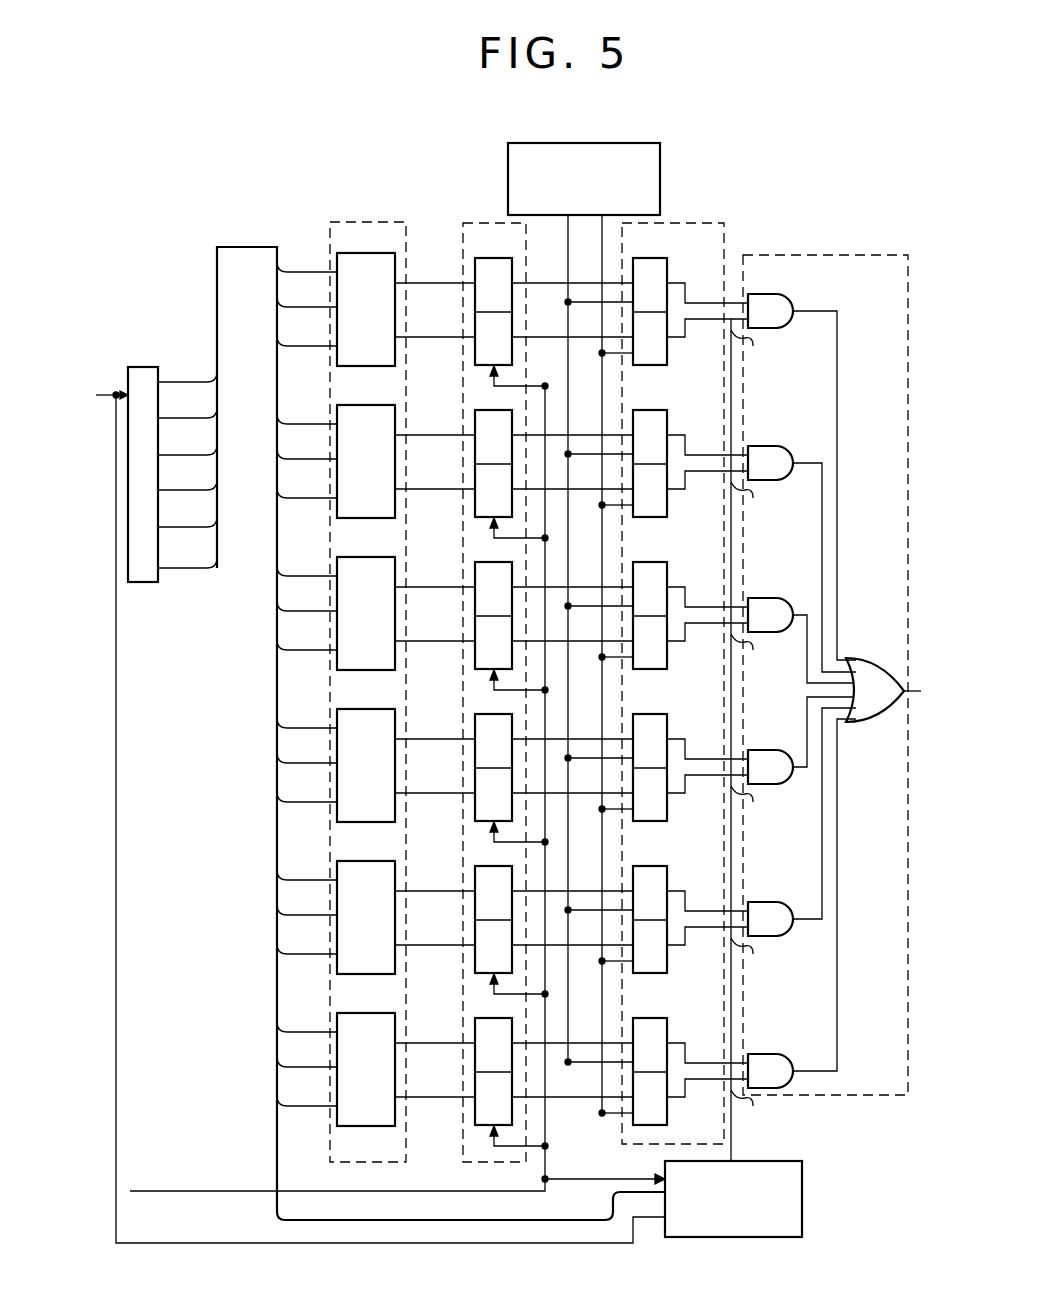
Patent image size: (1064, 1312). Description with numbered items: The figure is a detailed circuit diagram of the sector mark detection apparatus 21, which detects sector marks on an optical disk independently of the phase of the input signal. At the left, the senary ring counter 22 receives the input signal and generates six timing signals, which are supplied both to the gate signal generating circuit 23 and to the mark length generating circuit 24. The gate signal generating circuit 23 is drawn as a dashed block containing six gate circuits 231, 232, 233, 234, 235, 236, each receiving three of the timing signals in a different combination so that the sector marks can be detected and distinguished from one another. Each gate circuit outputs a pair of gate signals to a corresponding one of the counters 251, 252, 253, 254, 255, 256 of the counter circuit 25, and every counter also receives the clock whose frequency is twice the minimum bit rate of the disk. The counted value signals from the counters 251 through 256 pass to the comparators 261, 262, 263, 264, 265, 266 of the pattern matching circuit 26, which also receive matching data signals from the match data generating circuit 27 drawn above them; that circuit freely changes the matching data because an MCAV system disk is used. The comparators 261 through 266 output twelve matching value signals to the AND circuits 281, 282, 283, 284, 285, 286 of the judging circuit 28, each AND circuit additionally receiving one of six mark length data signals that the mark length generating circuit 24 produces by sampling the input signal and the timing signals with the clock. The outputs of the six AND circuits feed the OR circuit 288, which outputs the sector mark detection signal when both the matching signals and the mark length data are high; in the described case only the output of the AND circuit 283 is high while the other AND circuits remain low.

The sector mark detection apparatus 21 is at (225, 154).
The ring counter 22 is at (144, 367).
The gate signal generating circuit 23 is at (376, 221).
The mark length generating circuit 24 is at (802, 1213).
The counter circuit 25 is at (475, 222).
The pattern matching circuit 26 is at (712, 222).
The match data generating circuit 27 is at (581, 143).
The judging circuit 28 is at (793, 255).
The gate circuit 231 is at (380, 253).
The gate circuit 232 is at (380, 405).
The gate circuit 233 is at (380, 557).
The gate circuit 234 is at (380, 709).
The gate circuit 235 is at (380, 861).
The gate circuit 236 is at (380, 1013).
The counter 251 is at (475, 258).
The counter 252 is at (475, 410).
The counter 253 is at (475, 562).
The counter 254 is at (475, 714).
The counter 255 is at (475, 866).
The counter 256 is at (475, 1018).
The comparator 261 is at (634, 258).
The comparator 262 is at (634, 410).
The comparator 263 is at (634, 562).
The comparator 264 is at (634, 714).
The comparator 265 is at (634, 866).
The comparator 266 is at (634, 1018).
The AND circuit 281 is at (792, 294).
The AND circuit 282 is at (792, 446).
The AND circuit 283 is at (792, 598).
The AND circuit 284 is at (792, 750).
The AND circuit 285 is at (792, 902).
The AND circuit 286 is at (792, 1054).
The OR circuit 288 is at (864, 658).